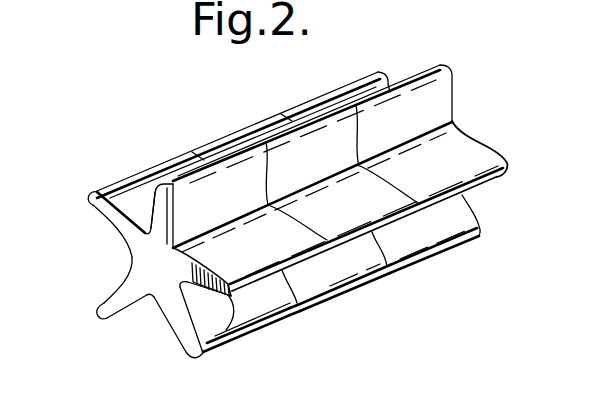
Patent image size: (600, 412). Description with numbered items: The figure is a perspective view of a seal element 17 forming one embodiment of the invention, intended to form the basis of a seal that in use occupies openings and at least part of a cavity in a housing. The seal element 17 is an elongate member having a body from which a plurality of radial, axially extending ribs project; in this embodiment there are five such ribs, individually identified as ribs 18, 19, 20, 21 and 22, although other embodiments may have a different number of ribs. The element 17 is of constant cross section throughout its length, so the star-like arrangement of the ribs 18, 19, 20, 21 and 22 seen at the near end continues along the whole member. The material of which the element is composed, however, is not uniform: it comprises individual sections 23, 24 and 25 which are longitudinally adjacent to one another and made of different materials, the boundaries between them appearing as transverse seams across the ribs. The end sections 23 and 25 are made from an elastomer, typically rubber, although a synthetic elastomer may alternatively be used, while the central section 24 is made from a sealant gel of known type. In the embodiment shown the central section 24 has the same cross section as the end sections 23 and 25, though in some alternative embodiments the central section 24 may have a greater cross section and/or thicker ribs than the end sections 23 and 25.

The seal element 17 is at (172, 141).
The rib 18 is at (93, 206).
The rib 19 is at (98, 304).
The rib 20 is at (183, 347).
The rib 21 is at (238, 354).
The rib 22 is at (152, 200).
The end section 23 is at (272, 331).
The central section 24 is at (340, 296).
The end section 25 is at (425, 262).